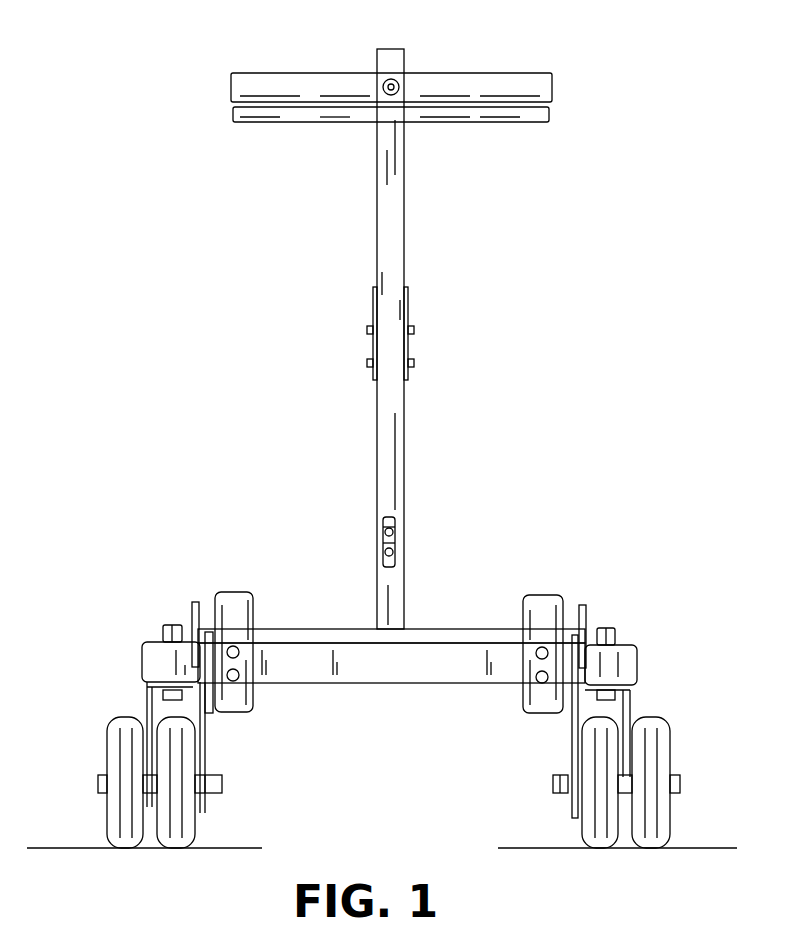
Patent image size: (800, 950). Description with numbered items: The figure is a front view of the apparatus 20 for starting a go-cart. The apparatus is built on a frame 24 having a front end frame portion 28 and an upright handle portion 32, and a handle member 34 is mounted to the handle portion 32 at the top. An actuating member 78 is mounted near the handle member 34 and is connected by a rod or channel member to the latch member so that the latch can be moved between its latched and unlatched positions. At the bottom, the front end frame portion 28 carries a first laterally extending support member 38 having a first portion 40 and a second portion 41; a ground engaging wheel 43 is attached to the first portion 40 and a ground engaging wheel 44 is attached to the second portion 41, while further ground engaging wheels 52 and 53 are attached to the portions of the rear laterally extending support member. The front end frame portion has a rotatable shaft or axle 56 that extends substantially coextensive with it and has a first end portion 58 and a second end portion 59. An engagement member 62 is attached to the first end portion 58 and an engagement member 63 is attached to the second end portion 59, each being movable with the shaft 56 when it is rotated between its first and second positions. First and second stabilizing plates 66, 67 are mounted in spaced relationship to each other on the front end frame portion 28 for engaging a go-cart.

The apparatus 20 is at (292, 293).
The frame 24 is at (377, 447).
The handle portion 32 is at (392, 229).
The handle member 34 is at (303, 72).
The actuating member 78 is at (476, 122).
The rotatable shaft or axle 56 is at (322, 640).
The first laterally extending support member 38 is at (400, 667).
The front end frame portion 28 is at (290, 670).
The first stabilizing plate 66 is at (228, 697).
The first end portion of shaft 58 is at (208, 633).
The engagement member 62 is at (193, 603).
The first portion of support member 40 is at (162, 670).
The ground engaging wheel 52 is at (123, 830).
The ground engaging wheel 43 is at (175, 830).
The second stabilizing plate 67 is at (537, 703).
The second end portion of shaft 59 is at (572, 633).
The engagement member 63 is at (583, 605).
The second portion of support member 41 is at (607, 666).
The ground engaging wheel 44 is at (598, 838).
The ground engaging wheel 53 is at (650, 838).